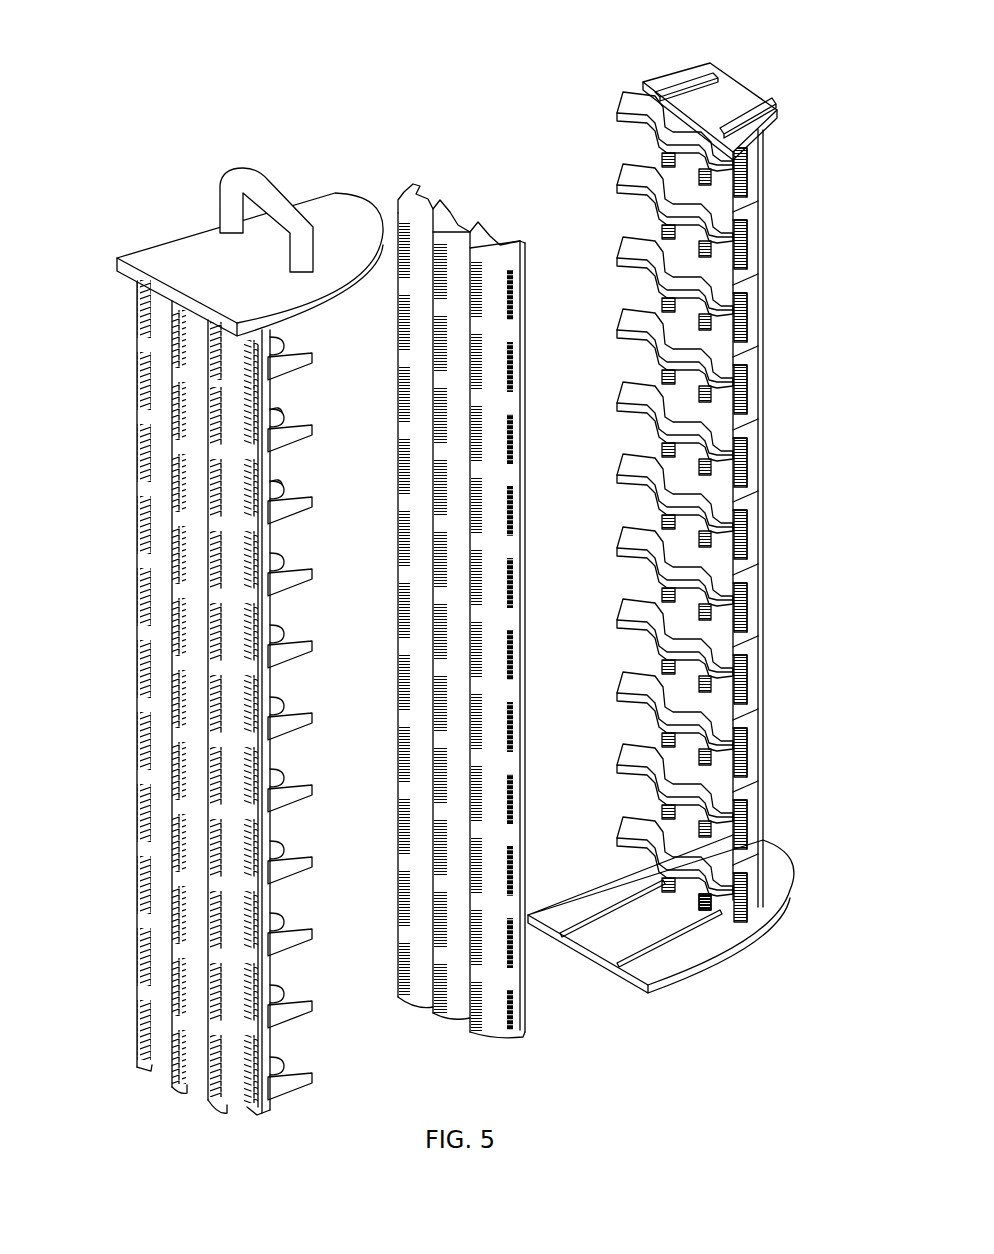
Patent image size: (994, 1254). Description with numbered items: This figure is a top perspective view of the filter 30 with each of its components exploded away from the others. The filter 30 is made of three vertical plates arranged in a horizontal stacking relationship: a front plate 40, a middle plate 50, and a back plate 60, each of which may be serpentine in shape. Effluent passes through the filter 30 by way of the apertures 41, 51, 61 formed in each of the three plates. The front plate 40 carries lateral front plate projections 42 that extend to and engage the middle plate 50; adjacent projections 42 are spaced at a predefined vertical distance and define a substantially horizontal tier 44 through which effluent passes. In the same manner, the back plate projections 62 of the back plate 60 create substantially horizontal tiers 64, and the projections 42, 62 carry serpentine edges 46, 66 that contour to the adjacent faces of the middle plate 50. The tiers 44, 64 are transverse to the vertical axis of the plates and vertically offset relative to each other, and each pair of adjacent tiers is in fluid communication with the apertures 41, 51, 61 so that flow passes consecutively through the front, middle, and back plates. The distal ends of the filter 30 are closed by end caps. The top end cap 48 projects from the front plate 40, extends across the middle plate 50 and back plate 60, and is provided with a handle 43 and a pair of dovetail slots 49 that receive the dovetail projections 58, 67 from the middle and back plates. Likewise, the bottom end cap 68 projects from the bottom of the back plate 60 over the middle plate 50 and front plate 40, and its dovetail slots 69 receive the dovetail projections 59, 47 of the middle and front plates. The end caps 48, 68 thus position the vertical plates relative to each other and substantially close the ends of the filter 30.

The filter 30 is at (300, 88).
The front plate 40 is at (137, 243).
The apertures 41 is at (137, 508).
The front plate projections 42 is at (303, 380).
The handle 43 is at (264, 190).
The horizontal tier 44 is at (303, 412).
The serpentine edges 46 is at (300, 845).
The dovetail projections 47 is at (145, 1078).
The top end cap 48 is at (180, 250).
The dovetail slots 49 is at (390, 243).
The middle plate 50 is at (430, 160).
The apertures 51 is at (398, 265).
The dovetail projections 58 is at (425, 195).
The dovetail projections 59 is at (400, 1005).
The back plate 60 is at (642, 55).
The apertures 61 is at (748, 200).
The back plate projections 62 is at (640, 100).
The horizontal tiers 64 is at (620, 150).
The serpentine edges 66 is at (700, 880).
The dovetail projections 67 is at (700, 78).
The bottom end cap 68 is at (690, 945).
The dovetail slots 69 is at (585, 925).